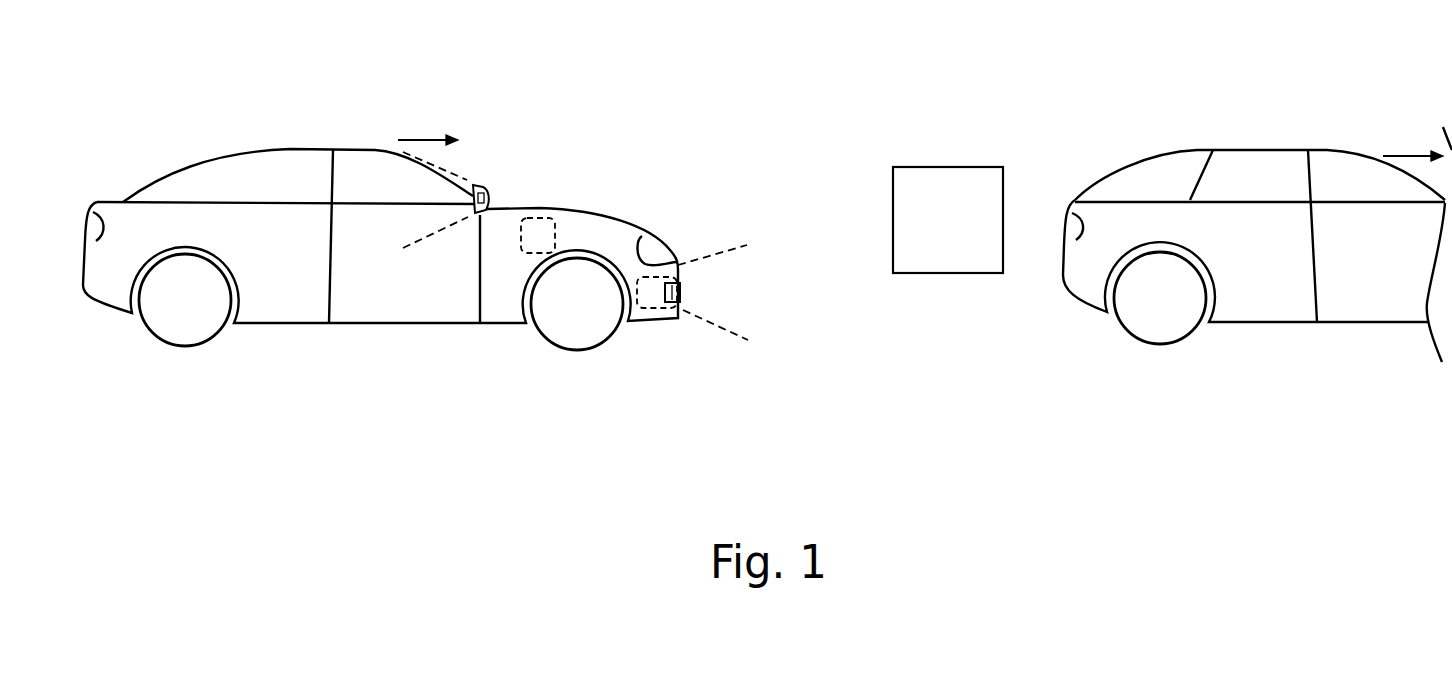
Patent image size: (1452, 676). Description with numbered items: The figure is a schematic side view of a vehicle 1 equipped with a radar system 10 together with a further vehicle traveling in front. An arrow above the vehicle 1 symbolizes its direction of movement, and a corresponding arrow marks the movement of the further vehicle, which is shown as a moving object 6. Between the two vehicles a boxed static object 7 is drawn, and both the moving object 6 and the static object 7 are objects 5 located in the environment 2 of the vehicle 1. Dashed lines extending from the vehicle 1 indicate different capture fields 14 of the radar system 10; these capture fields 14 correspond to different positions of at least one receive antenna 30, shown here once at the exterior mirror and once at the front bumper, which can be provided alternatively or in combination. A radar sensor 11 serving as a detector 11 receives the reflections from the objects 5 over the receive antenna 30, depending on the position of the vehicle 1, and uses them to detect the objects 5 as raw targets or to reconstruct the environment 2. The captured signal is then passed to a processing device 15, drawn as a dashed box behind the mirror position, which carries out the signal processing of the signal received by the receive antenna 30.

The vehicle 1 is at (593, 220).
The environment 2 is at (910, 92).
The object 5 is at (965, 302).
The moving object 6 is at (1197, 150).
The static object 7 is at (955, 264).
The radar system 10 is at (493, 236).
The radar sensor 11 is at (658, 310).
The capture field 14 is at (447, 233).
The processing device 15 is at (537, 222).
The receive antenna 30 is at (483, 185).